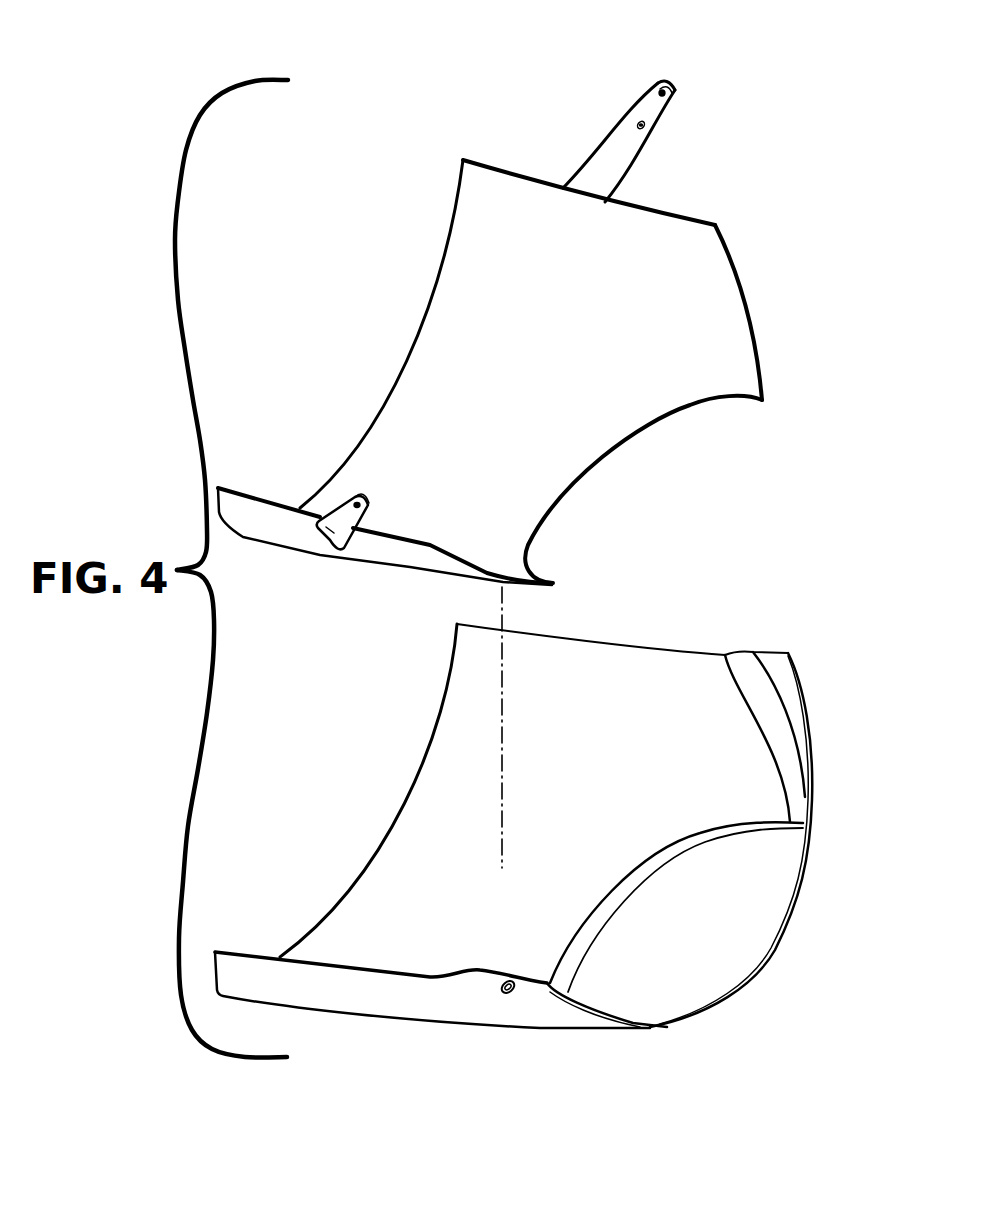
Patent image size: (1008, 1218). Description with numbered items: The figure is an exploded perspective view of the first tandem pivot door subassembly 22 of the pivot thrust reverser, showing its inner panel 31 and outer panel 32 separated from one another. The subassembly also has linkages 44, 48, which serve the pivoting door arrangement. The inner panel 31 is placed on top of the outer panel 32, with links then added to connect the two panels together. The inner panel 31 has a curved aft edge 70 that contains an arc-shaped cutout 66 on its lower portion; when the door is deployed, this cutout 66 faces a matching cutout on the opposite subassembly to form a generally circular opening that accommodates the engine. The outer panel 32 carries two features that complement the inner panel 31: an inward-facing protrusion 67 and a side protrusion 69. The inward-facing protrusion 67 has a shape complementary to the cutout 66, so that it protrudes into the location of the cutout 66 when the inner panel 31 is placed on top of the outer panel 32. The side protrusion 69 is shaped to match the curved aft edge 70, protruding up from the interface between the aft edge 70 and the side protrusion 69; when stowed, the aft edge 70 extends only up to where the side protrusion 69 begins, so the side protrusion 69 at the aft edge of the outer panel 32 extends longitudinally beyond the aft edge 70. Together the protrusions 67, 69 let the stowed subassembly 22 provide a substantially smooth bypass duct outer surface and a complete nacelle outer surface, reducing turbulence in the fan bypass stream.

The first tandem pivot door subassembly 22 is at (393, 103).
The inner panel 31 is at (437, 380).
The outer panel 32 is at (367, 948).
The linkage 44 is at (328, 527).
The linkage 48 is at (622, 153).
The cutout 66 is at (580, 465).
The inward-facing protrusion 67 is at (690, 935).
The side protrusion 69 is at (778, 704).
The aft edge 70 is at (750, 308).